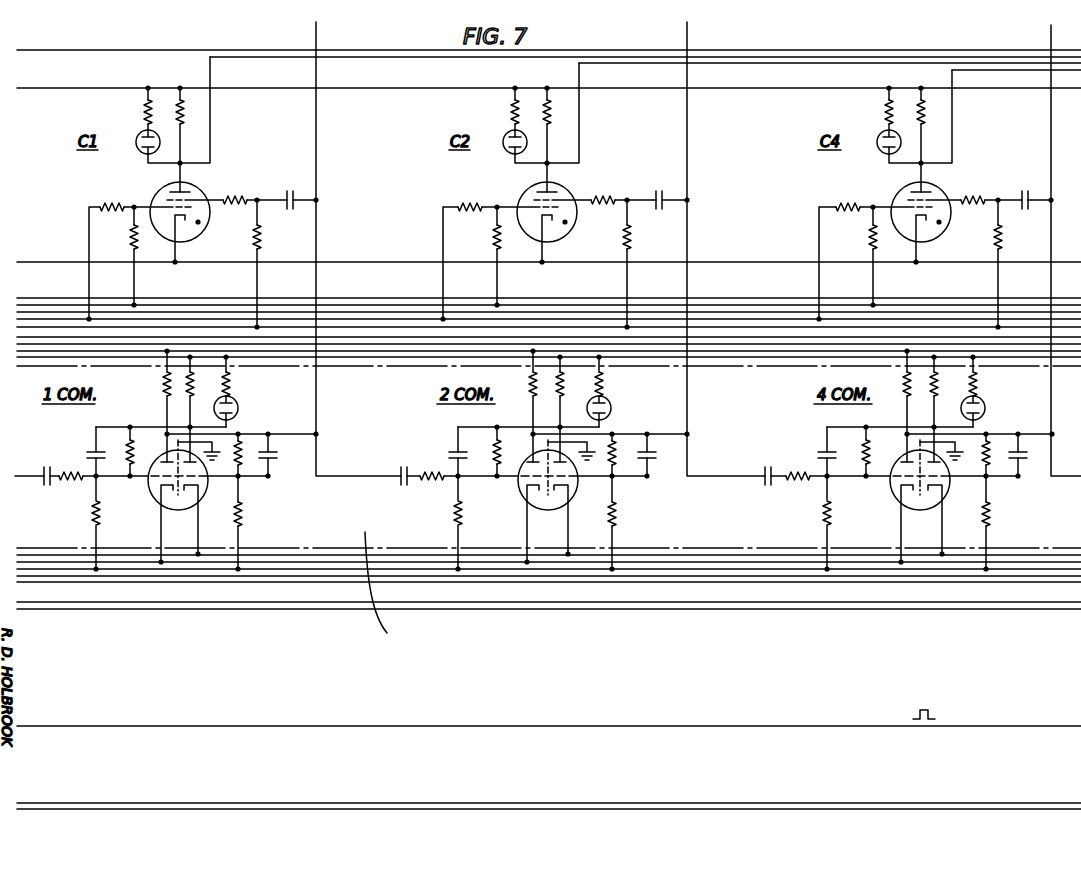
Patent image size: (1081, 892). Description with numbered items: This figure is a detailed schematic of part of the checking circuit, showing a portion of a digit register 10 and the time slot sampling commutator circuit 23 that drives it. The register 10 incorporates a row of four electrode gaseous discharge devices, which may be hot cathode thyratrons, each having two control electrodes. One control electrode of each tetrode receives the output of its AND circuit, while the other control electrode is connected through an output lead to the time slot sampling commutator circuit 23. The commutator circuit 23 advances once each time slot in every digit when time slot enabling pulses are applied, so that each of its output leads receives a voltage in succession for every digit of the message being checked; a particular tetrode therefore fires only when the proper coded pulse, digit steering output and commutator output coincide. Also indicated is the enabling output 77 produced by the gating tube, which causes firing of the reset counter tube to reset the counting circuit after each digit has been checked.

The digit register 10 is at (373, 191).
The time slot sampling commutator circuit 23 is at (300, 522).
The enabling output 77 is at (933, 712).